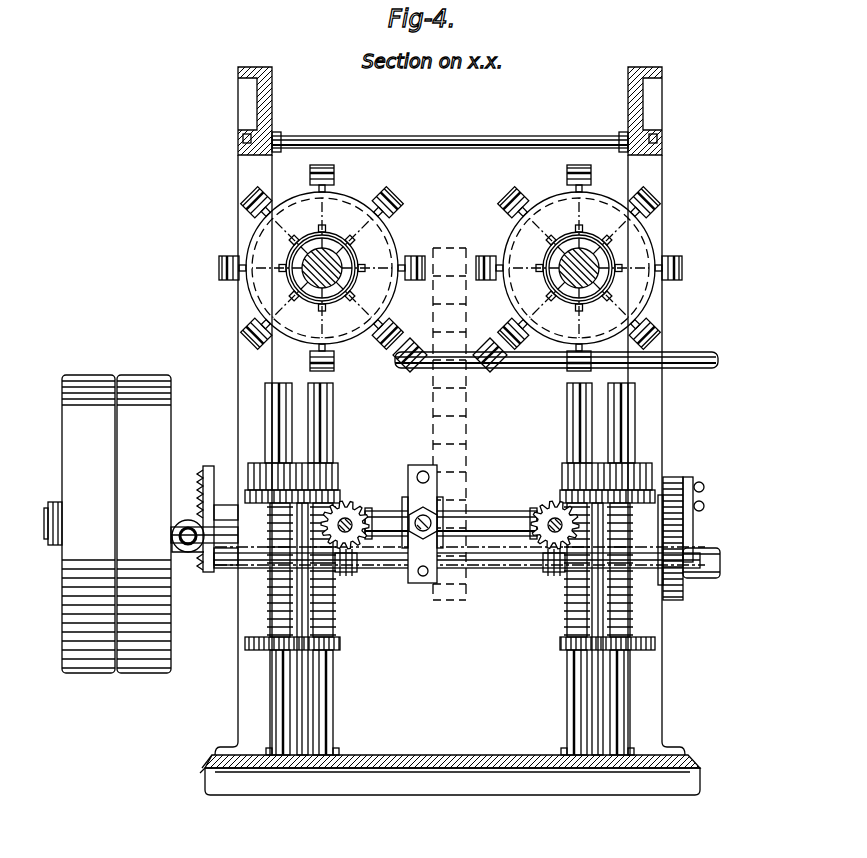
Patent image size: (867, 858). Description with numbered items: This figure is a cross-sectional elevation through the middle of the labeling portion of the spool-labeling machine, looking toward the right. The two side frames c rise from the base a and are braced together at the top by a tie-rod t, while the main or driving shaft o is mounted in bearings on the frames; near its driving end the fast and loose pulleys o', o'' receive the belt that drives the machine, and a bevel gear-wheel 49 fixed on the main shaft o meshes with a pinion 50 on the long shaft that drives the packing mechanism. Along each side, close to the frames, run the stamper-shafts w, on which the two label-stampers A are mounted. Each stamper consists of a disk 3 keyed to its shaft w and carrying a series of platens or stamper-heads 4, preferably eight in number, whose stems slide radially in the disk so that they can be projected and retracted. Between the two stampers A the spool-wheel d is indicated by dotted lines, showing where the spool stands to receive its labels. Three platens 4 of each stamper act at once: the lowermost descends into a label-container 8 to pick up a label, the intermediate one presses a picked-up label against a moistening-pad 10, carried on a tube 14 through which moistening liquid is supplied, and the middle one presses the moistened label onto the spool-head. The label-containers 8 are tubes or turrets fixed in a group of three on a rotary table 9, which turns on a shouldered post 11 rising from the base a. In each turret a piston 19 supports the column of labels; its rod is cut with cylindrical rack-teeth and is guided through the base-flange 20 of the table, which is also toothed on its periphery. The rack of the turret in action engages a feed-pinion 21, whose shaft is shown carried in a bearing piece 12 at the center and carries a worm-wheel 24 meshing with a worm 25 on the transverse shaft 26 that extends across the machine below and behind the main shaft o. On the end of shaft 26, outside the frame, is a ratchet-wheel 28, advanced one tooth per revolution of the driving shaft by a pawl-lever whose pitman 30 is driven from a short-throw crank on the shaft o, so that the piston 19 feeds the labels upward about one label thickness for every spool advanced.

The side frames c is at (450, 411).
The base a is at (450, 775).
The tie-rods t is at (450, 135).
The label-stampers A is at (450, 268).
The disk 3 is at (450, 268).
The stamper-shafts w is at (620, 244).
The platens or stamper-heads 4 is at (450, 268).
The spool-wheel d is at (455, 424).
The horizontal rod 14 is at (566, 366).
The moistening-pad 10 is at (448, 365).
The label-containers 8 is at (450, 423).
The rotary table 9 is at (450, 483).
The piston 19 is at (453, 629).
The base-flange 20 is at (450, 648).
The shouldered post 11 is at (450, 702).
The main or driving shaft o is at (451, 523).
The transverse shaft 26 is at (459, 569).
The bearing bracket 12 is at (422, 517).
The feed-pinion 21 is at (370, 508).
The worm-wheel 24 is at (450, 514).
The worm 25 is at (451, 570).
The ratchet-wheel 28 is at (678, 546).
The pitman 30 is at (705, 528).
The loose pulley o'' is at (79, 524).
The fast pulley o' is at (144, 524).
The pinion 50 is at (188, 519).
The bevel gear-wheel 49 is at (217, 516).